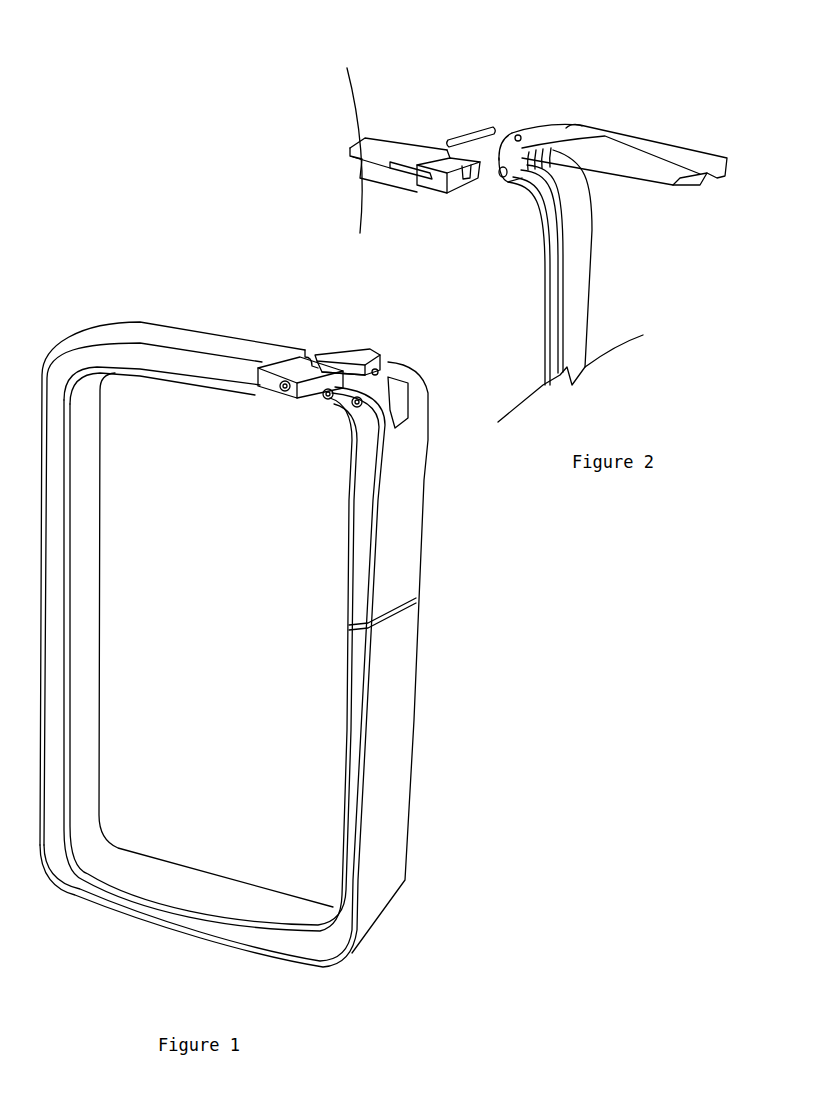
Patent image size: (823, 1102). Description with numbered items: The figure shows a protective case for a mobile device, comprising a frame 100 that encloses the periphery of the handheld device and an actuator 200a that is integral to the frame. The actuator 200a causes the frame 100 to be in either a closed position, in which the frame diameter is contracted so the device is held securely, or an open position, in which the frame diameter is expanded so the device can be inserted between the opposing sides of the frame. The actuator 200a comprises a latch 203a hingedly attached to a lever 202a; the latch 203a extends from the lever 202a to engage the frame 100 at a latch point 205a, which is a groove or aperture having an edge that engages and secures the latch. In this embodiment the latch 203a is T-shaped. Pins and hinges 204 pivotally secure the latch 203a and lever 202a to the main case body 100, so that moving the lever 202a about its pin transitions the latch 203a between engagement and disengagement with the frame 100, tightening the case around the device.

In FIG. 1, the frame 100 is at (414, 648).
In FIG. 2, the frame 100 is at (599, 262).
In FIG. 1, the actuator 200a is at (392, 328).
In FIG. 2, the actuator 200a is at (595, 64).
In FIG. 1, the lever 202a is at (419, 528).
In FIG. 2, the lever 202a is at (682, 150).
In FIG. 2, the latch 203a is at (487, 125).
In FIG. 1, the pins and hinges 204 is at (324, 397).
In FIG. 1, the latch point 205a is at (297, 396).
In FIG. 2, the latch point 205a is at (437, 187).